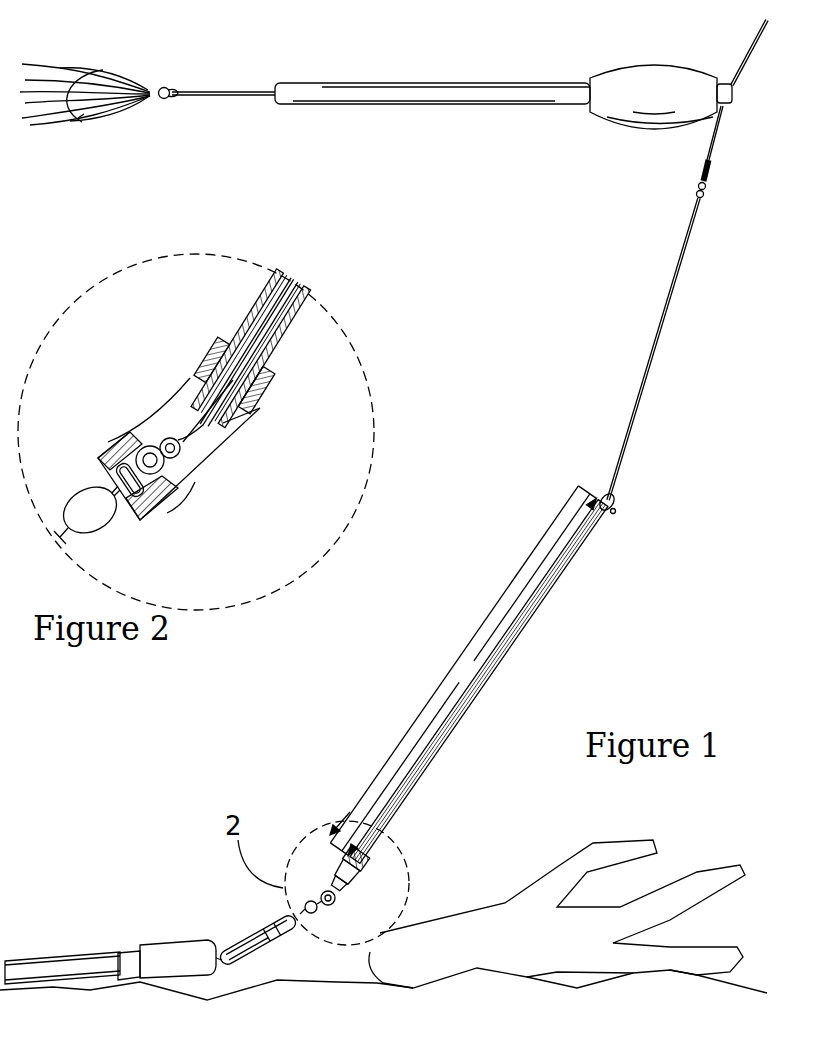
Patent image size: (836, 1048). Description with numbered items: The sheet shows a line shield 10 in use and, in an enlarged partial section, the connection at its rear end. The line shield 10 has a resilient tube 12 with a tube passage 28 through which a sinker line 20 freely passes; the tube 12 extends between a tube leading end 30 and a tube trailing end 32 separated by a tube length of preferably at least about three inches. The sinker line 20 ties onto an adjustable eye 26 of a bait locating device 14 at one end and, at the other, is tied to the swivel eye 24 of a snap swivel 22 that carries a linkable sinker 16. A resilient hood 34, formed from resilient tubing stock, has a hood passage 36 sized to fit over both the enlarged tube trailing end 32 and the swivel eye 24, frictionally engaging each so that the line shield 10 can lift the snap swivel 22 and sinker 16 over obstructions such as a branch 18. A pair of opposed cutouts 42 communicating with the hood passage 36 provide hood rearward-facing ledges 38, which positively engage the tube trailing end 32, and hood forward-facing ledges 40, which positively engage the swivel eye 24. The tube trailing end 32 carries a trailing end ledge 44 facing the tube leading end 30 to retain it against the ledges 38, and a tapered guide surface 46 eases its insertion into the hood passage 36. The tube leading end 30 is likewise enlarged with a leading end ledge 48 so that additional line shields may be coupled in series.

In FIG. 1, the line shield 10 is at (417, 658).
In FIG. 2, the line shield 10 is at (146, 333).
In FIG. 1, the resilient tube 12 is at (545, 640).
In FIG. 2, the resilient tube 12 is at (227, 306).
In FIG. 1, the bait locating device 14 is at (584, 133).
In FIG. 1, the sinker 16 is at (105, 955).
In FIG. 1, the branch 18 is at (520, 900).
In FIG. 1, the sinker line 20 is at (640, 398).
In FIG. 2, the sinker line 20 is at (267, 318).
In FIG. 1, the snap swivel 22 is at (238, 919).
In FIG. 2, the snap swivel 22 is at (70, 465).
In FIG. 1, the swivel eye 24 is at (330, 912).
In FIG. 2, the swivel eye 24 is at (137, 437).
In FIG. 1, the adjustable eye 26 is at (693, 190).
In FIG. 2, the tube passage 28 is at (252, 357).
In FIG. 1, the tube leading end 30 is at (626, 506).
In FIG. 1, the tube trailing end 32 is at (370, 870).
In FIG. 2, the tube trailing end 32 is at (246, 427).
In FIG. 1, the resilient hood 34 is at (392, 859).
In FIG. 2, the resilient hood 34 is at (140, 400).
In FIG. 1, the hood passage 36 is at (348, 880).
In FIG. 2, the hood passage 36 is at (200, 437).
In FIG. 2, the hood rearward-facing ledge 38 is at (193, 373).
In FIG. 2, the hood forward-facing ledge 40 is at (182, 527).
In FIG. 2, the opposed cutouts 42 is at (177, 413).
In FIG. 2, the trailing end ledge 44 is at (263, 392).
In FIG. 2, the tapered guide surface 46 is at (222, 428).
In FIG. 1, the leading end ledge 48 is at (615, 512).